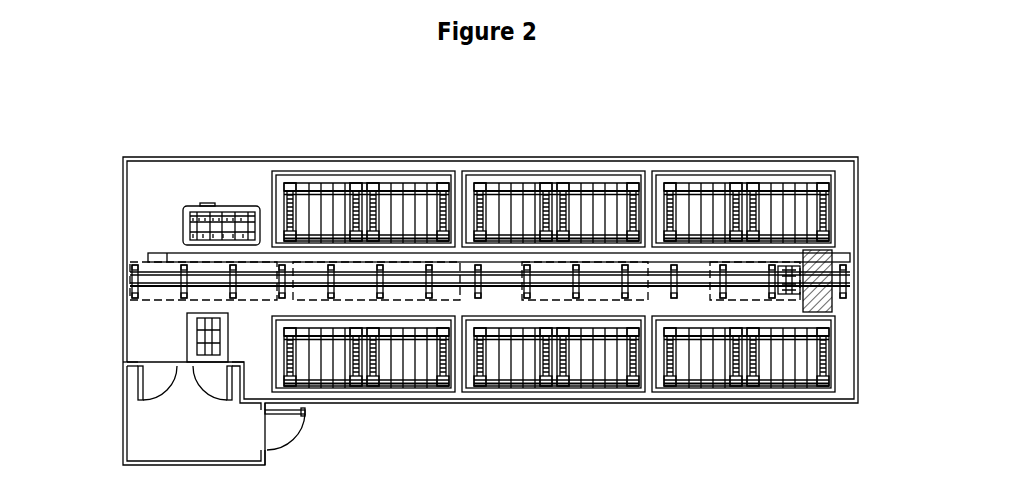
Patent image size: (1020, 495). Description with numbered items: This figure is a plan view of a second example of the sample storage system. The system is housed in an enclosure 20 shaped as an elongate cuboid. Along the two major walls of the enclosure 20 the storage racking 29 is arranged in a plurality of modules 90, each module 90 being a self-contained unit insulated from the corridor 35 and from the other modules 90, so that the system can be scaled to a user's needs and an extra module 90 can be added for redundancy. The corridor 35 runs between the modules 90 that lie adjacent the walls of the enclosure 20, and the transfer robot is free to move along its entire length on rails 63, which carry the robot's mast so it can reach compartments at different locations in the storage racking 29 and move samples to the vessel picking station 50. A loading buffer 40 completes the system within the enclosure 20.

The enclosure 20 is at (254, 132).
The storage racking 29 is at (820, 372).
The corridor 35 is at (493, 255).
The loading buffer 40 is at (224, 421).
The vessel picking station 50 is at (185, 190).
The rails 63 is at (592, 275).
The modules 90 is at (693, 348).